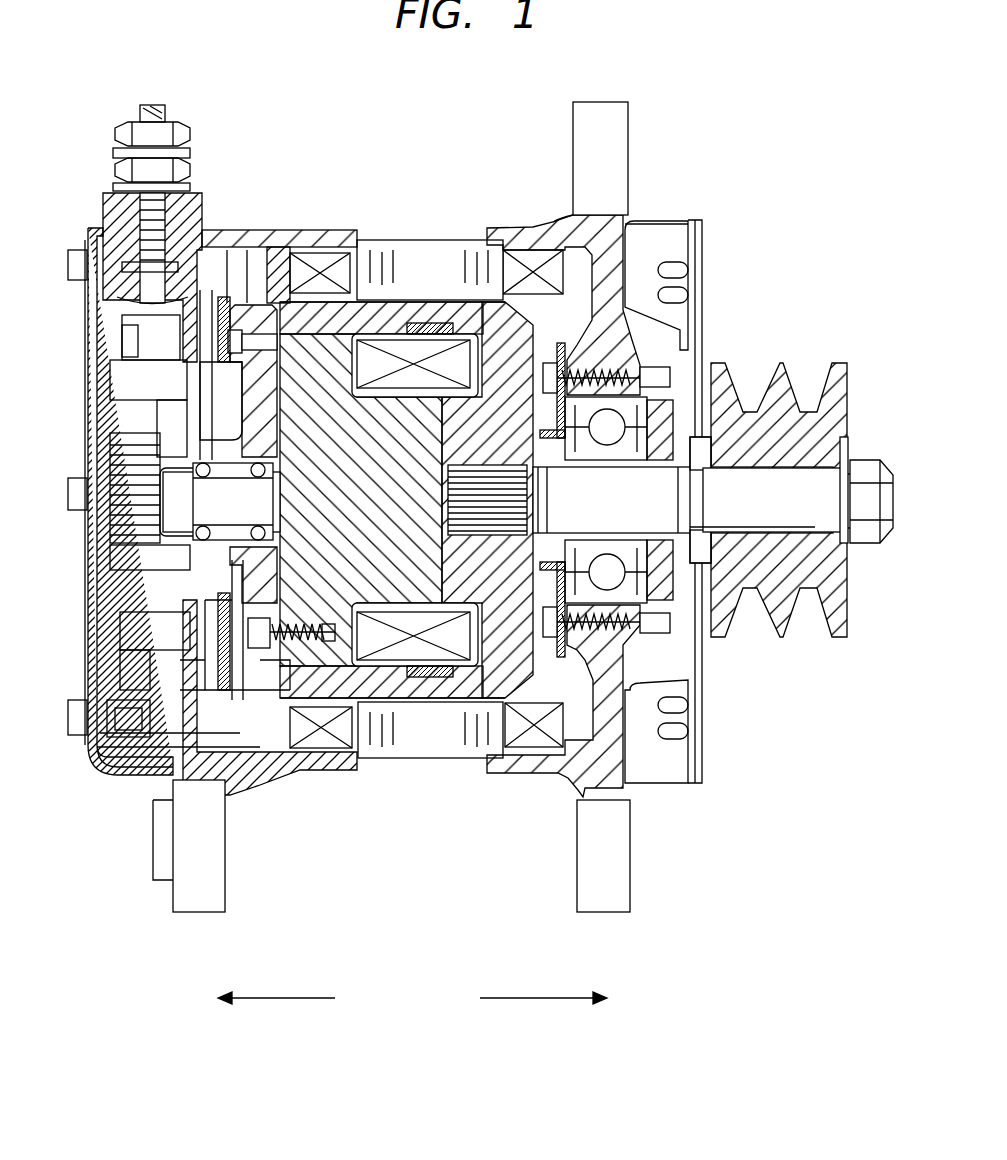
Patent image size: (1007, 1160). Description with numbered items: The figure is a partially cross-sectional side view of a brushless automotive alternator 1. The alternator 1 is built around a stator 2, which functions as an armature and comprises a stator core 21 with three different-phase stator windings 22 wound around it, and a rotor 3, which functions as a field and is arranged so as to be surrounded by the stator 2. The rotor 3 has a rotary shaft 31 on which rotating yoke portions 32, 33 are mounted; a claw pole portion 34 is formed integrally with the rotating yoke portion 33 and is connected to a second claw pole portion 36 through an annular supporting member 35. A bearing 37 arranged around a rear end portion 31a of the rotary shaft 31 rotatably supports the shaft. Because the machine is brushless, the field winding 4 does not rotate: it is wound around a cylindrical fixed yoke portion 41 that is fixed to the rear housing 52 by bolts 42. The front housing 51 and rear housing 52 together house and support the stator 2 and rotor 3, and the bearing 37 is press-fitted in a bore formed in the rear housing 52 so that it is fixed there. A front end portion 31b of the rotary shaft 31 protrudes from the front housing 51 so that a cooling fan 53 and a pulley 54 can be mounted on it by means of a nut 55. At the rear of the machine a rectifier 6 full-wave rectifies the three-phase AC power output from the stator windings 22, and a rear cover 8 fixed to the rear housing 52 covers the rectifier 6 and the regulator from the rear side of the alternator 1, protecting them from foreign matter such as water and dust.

The brushless automotive alternator 1 is at (692, 96).
The stator 2 is at (424, 230).
The stator core 21 is at (388, 248).
The stator windings 22 is at (310, 262).
The rotor 3 is at (545, 314).
The rotary shaft 31 is at (632, 503).
The rear end portion of the rotary shaft 31a is at (223, 503).
The front end portion of the rotary shaft 31b is at (757, 513).
The rotating yoke portion 32 is at (372, 580).
The rotating yoke portion 33 is at (506, 630).
The field winding 4 is at (422, 345).
The claw pole portion 34 is at (467, 676).
The annular supporting member 35 is at (425, 678).
The claw pole portion 36 is at (334, 702).
The bearing 37 is at (217, 460).
The fixed yoke portion 41 is at (266, 645).
The bolts 42 is at (268, 700).
The front housing 51 is at (622, 858).
The rear housing 52 is at (190, 900).
The cooling fan 53 is at (663, 235).
The pulley 54 is at (786, 367).
The nut 55 is at (871, 460).
The rectifier 6 is at (130, 589).
The rear cover 8 is at (95, 770).